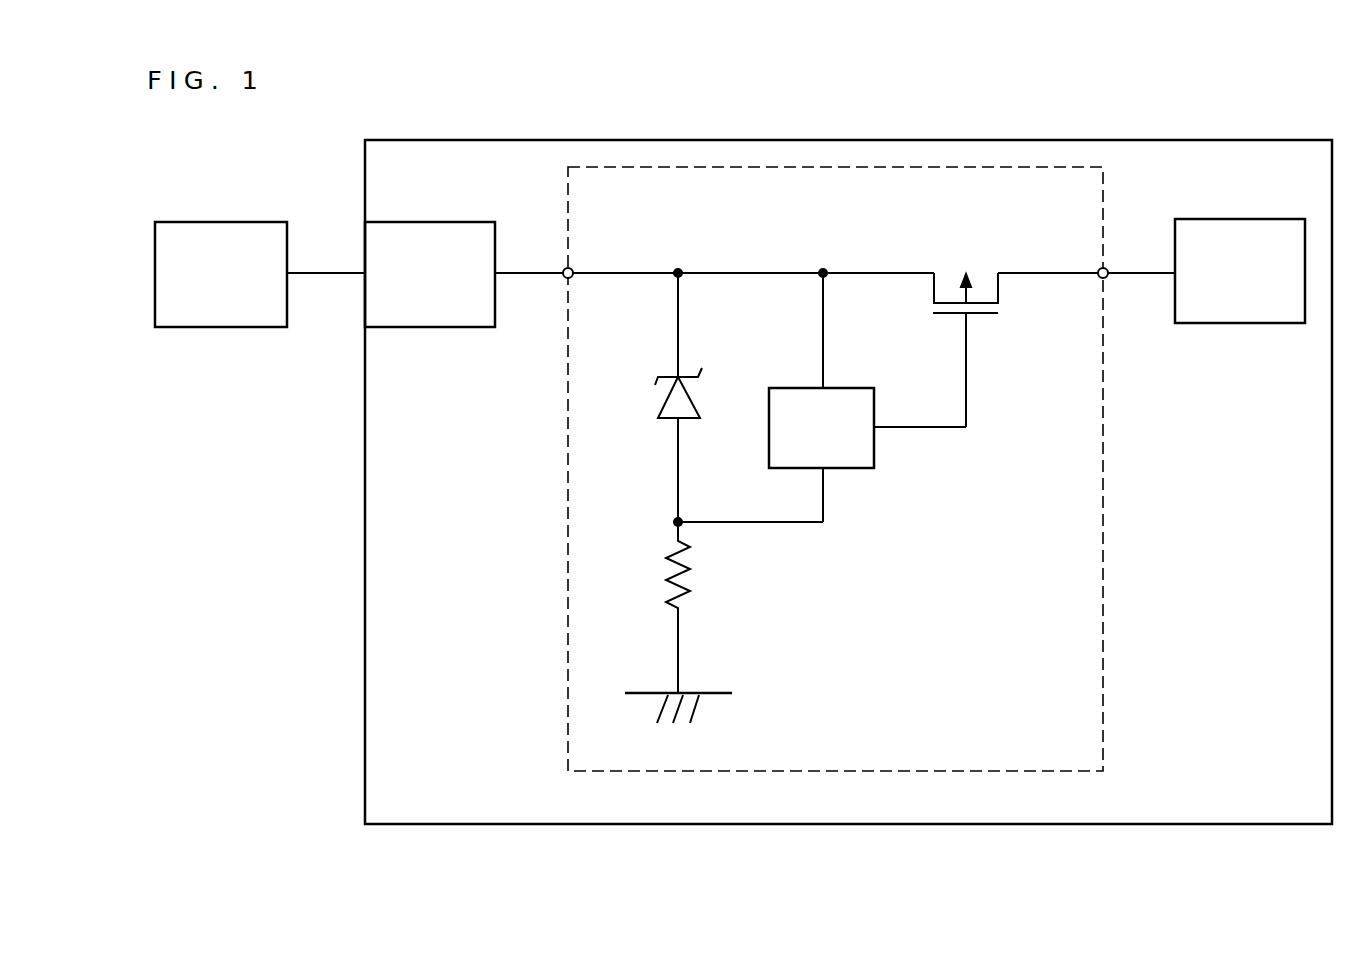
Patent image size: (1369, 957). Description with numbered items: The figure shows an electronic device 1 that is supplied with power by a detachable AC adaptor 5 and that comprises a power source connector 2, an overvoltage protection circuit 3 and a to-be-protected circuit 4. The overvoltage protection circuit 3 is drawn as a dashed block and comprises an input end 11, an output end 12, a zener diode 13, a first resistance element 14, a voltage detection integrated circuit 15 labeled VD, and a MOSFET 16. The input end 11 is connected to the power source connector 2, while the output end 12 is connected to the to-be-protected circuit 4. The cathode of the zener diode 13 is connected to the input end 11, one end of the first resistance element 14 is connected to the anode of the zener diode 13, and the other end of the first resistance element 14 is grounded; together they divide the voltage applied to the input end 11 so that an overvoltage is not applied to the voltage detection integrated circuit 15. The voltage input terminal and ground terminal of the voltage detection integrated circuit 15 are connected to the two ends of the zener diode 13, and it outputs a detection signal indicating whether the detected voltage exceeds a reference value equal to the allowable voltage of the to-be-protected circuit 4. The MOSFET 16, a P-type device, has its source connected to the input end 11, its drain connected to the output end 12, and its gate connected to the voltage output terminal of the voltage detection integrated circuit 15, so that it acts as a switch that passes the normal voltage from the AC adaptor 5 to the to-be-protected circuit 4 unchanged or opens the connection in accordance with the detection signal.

The electronic device 1 is at (1227, 140).
The power source connector 2 is at (495, 240).
The overvoltage protection circuit 3 is at (1103, 200).
The to-be-protected circuit 4 is at (1228, 219).
The AC adaptor 5 is at (237, 222).
The input end 11 is at (573, 266).
The output end 12 is at (1099, 268).
The zener diode 13 is at (656, 418).
The first resistance element 14 is at (665, 582).
The voltage detection integrated circuit 15 is at (848, 388).
The MOSFET 16 is at (990, 315).